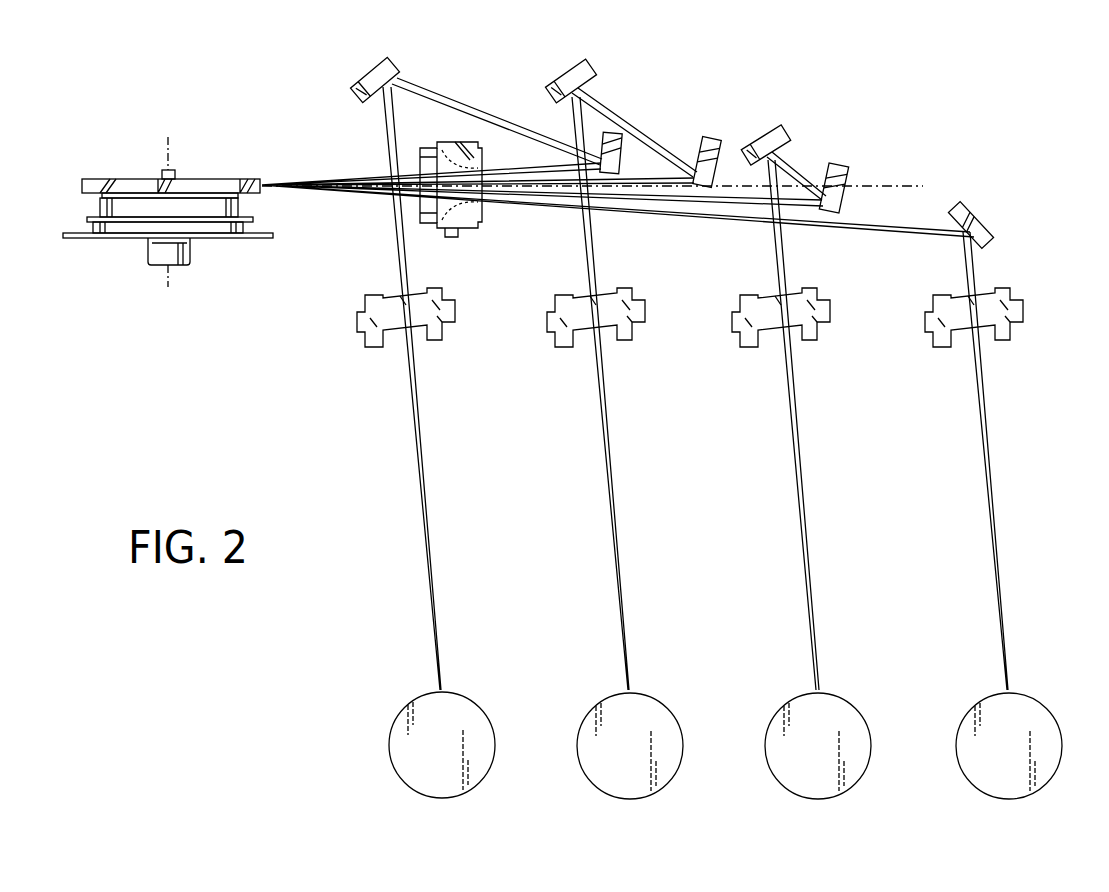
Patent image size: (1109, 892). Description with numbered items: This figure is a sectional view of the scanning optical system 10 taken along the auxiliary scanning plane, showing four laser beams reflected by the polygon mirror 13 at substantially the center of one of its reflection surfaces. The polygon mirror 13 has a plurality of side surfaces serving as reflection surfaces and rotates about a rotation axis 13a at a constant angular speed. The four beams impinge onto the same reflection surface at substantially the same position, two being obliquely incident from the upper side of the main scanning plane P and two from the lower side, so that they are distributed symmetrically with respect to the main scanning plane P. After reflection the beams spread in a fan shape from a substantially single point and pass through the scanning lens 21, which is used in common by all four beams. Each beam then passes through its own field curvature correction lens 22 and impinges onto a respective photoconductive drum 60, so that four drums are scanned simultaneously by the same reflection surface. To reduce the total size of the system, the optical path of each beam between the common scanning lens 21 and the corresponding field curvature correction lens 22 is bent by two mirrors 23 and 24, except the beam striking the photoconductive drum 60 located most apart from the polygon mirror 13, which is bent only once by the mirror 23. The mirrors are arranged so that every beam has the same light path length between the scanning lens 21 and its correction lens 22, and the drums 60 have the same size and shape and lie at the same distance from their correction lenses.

The scanning optical system 10 is at (224, 98).
The polygon mirror 13 is at (150, 186).
The rotation axis 13a is at (168, 288).
The scanning lens 21 is at (468, 233).
The field curvature correction lens 22 is at (463, 346).
The mirror 23 is at (615, 131).
The mirror 24 is at (364, 82).
The photoconductive drum 60 is at (397, 756).
The main scanning plane P is at (912, 185).